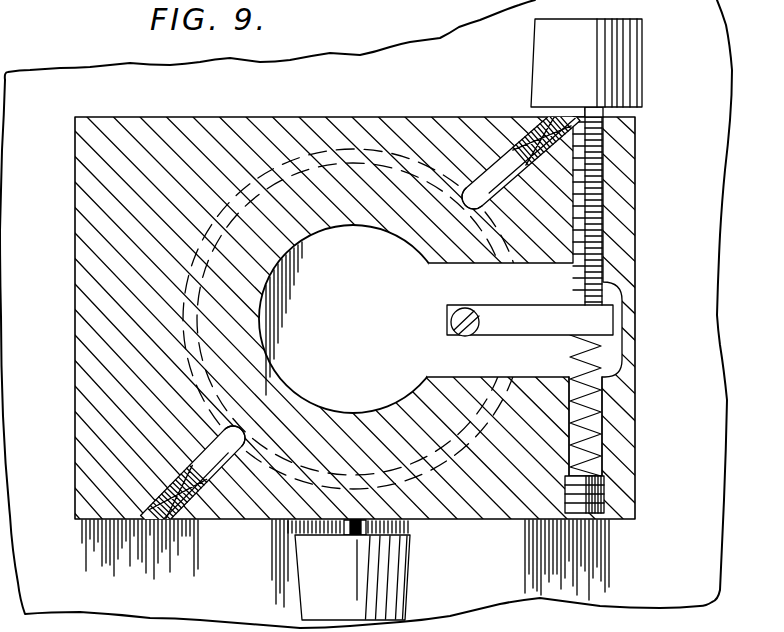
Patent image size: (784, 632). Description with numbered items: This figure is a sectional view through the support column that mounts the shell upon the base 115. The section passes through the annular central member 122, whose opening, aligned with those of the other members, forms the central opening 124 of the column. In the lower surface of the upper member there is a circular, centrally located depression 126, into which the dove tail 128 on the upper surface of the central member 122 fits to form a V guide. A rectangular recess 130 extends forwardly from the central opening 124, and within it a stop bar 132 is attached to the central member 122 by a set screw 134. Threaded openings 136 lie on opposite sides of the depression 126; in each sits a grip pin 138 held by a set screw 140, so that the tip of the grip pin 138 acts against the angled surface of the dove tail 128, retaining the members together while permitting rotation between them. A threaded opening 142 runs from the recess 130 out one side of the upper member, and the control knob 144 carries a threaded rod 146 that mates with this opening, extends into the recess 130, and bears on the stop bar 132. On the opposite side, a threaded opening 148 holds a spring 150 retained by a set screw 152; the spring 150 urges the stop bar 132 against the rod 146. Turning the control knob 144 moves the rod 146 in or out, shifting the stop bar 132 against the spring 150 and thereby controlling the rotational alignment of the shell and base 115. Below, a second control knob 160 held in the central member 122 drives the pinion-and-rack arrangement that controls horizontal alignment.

The base 115 is at (684, 343).
The central member 122 is at (627, 182).
The central opening 124 is at (393, 236).
The depression 126 is at (196, 243).
The dove tail 128 is at (253, 180).
The recess 130 is at (620, 290).
The stop bar 132 is at (480, 335).
The set screw 134 is at (455, 312).
The threaded openings 136 is at (558, 120).
The grip pin 138 is at (504, 183).
The set screw 140 is at (525, 137).
The threaded opening 142 is at (589, 230).
The control knob 144 is at (600, 35).
The threaded rod 146 is at (605, 113).
The threaded opening 148 is at (595, 423).
The spring 150 is at (610, 404).
The set screw 152 is at (608, 487).
The control knob 160 is at (410, 572).